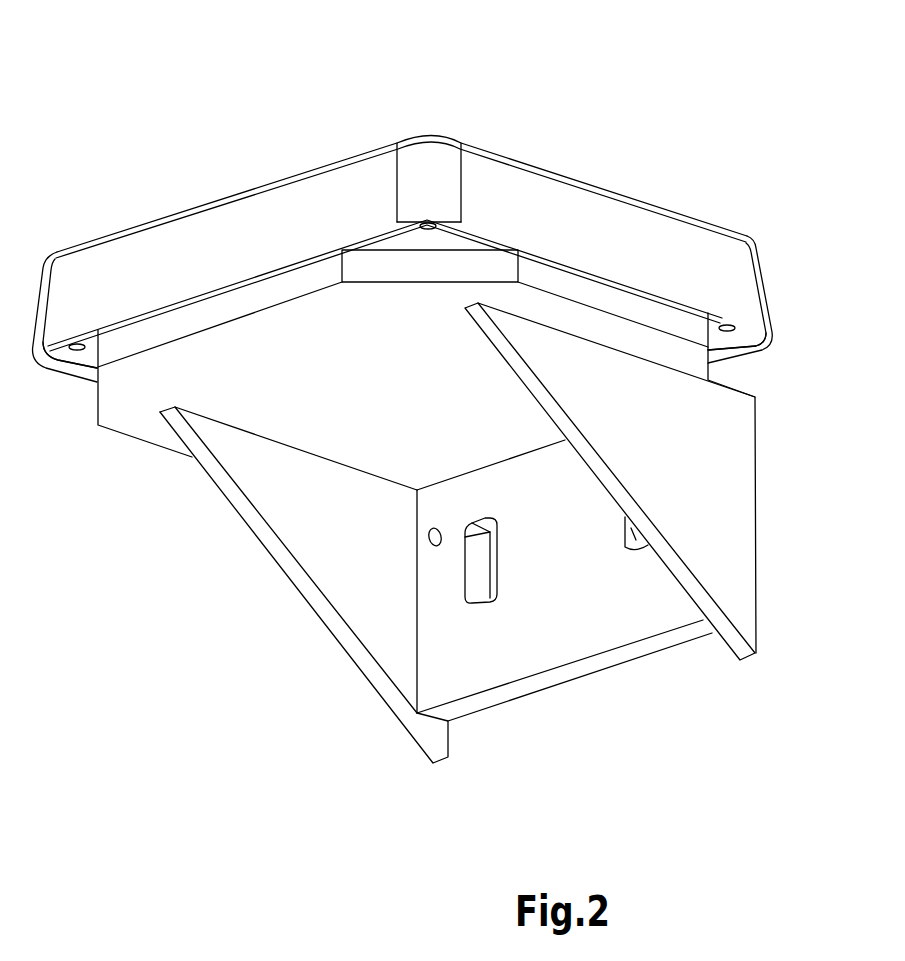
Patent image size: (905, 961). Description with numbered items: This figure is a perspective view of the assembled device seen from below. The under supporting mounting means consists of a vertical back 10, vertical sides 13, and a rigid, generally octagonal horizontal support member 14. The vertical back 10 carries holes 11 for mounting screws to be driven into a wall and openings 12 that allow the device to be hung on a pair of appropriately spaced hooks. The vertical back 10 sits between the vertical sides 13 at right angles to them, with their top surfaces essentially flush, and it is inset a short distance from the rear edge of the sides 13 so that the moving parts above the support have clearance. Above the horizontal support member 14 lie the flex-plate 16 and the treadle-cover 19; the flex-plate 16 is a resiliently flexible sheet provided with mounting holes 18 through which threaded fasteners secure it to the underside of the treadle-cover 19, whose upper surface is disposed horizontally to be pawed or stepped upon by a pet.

The vertical back 10 is at (576, 597).
The holes 11 is at (428, 541).
The openings 12 is at (628, 547).
The vertical sides 13 is at (354, 558).
The horizontal support member 14 is at (431, 398).
The flex-plate 16 is at (447, 240).
The mounting holes 18 is at (427, 223).
The treadle-cover 19 is at (284, 137).